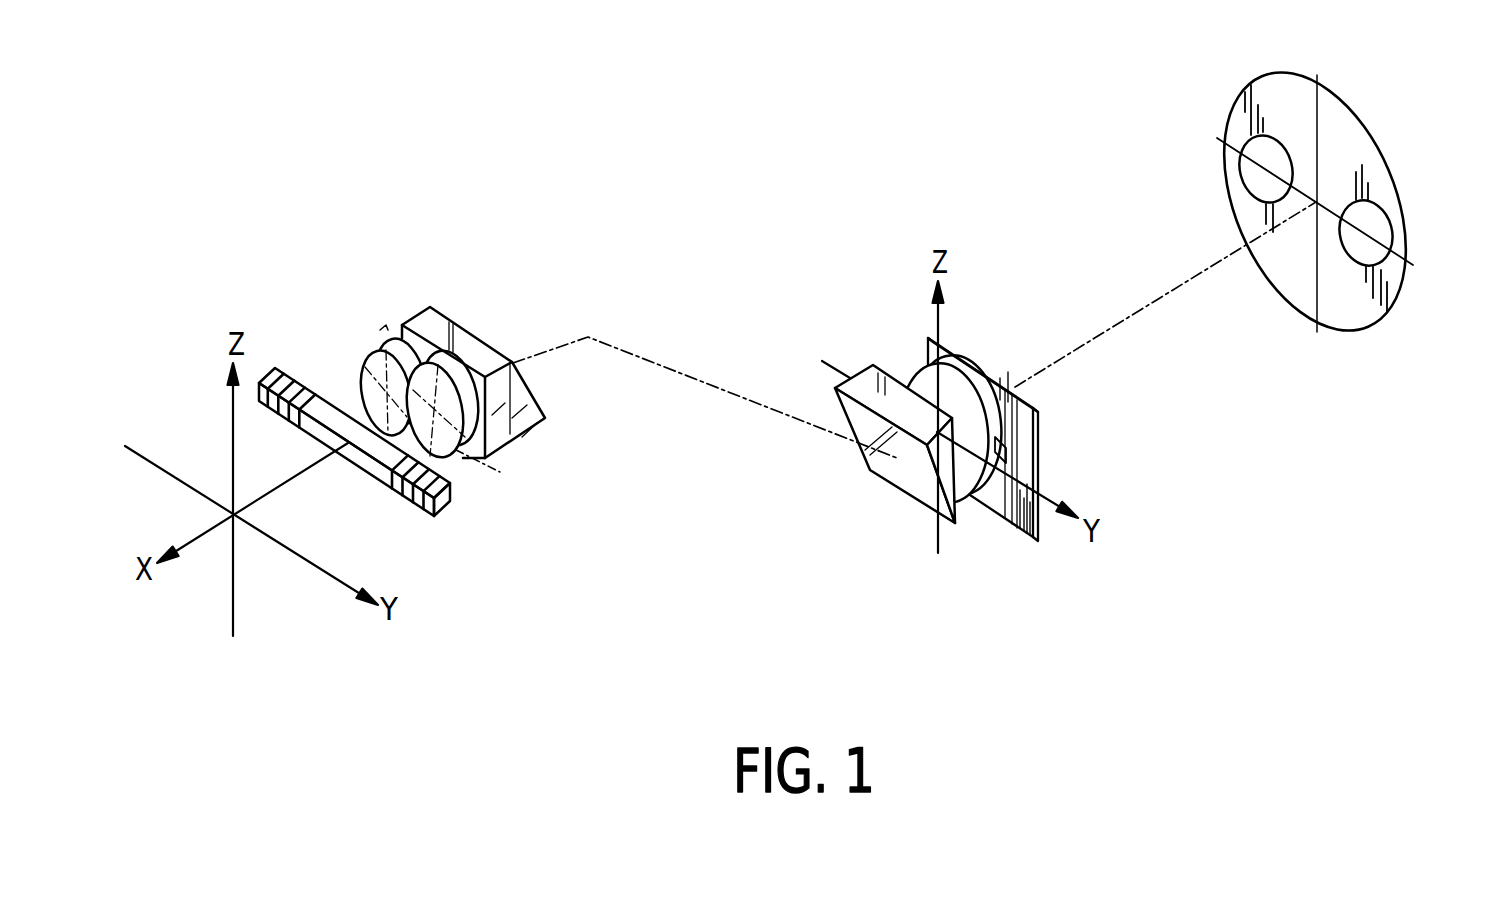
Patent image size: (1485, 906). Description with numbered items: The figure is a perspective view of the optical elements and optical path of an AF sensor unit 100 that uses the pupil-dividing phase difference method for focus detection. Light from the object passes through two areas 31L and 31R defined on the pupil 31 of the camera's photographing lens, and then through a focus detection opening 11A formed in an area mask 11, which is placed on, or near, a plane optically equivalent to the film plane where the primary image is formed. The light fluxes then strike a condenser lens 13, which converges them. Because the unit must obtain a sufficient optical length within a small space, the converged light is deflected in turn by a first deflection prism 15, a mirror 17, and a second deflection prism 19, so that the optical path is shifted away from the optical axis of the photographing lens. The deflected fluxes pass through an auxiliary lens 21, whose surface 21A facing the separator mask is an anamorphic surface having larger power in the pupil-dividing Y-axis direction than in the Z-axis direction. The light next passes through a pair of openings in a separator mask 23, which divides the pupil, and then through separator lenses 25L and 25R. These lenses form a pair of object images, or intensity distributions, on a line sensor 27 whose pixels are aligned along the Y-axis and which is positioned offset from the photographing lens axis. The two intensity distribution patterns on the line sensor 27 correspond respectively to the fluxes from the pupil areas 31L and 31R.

The AF sensor unit 100 is at (846, 163).
The area mask 11 is at (1017, 415).
The focus detection opening 11A is at (1010, 457).
The condenser lens 13 is at (957, 392).
The first deflection prism 15 is at (902, 478).
The mirror 17 is at (588, 337).
The second deflection prism 19 is at (537, 418).
The auxiliary lens 21 is at (430, 325).
The surface of the auxiliary lens 21A is at (480, 372).
The separator mask 23 is at (494, 466).
The separator lens 25L is at (450, 447).
The separator lens 25R is at (377, 365).
The line sensor 27 is at (383, 468).
The pupil 31 is at (1350, 145).
The area of the pupil 31L is at (1262, 177).
The area of the pupil 31R is at (1373, 233).